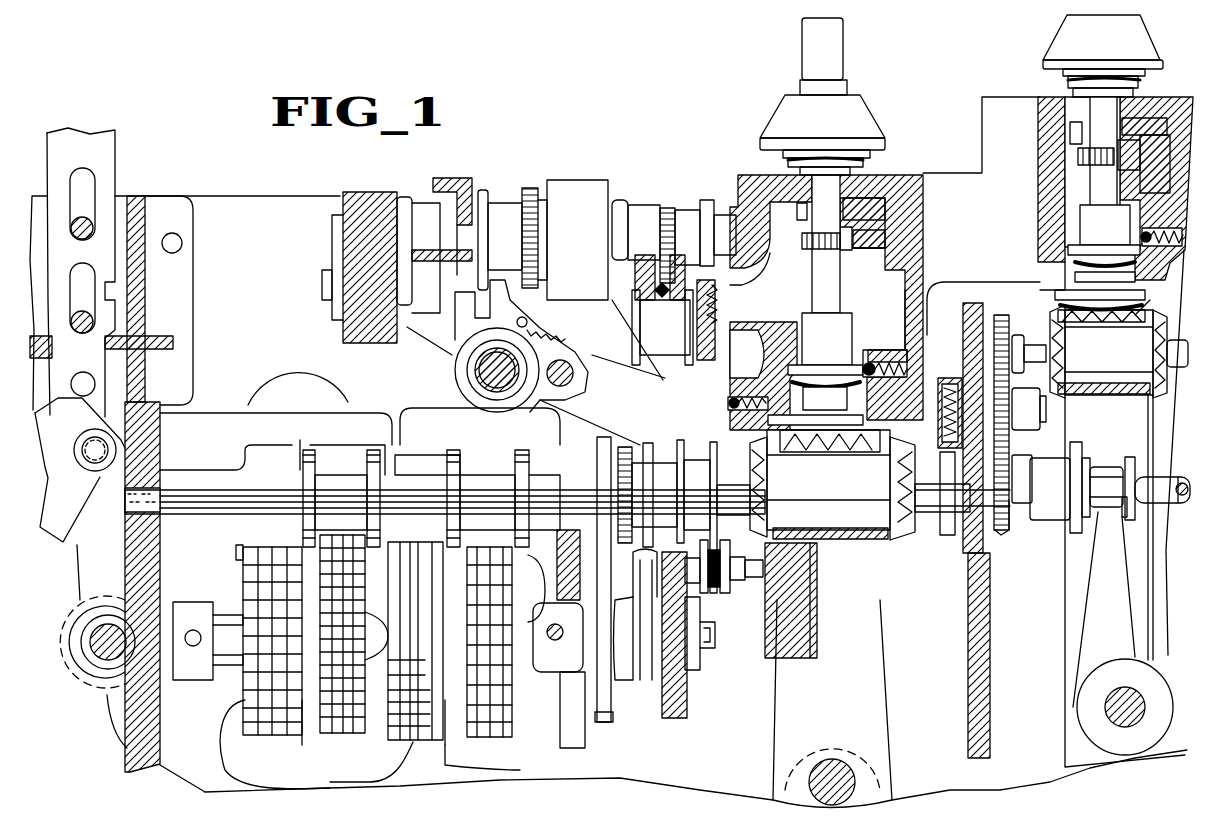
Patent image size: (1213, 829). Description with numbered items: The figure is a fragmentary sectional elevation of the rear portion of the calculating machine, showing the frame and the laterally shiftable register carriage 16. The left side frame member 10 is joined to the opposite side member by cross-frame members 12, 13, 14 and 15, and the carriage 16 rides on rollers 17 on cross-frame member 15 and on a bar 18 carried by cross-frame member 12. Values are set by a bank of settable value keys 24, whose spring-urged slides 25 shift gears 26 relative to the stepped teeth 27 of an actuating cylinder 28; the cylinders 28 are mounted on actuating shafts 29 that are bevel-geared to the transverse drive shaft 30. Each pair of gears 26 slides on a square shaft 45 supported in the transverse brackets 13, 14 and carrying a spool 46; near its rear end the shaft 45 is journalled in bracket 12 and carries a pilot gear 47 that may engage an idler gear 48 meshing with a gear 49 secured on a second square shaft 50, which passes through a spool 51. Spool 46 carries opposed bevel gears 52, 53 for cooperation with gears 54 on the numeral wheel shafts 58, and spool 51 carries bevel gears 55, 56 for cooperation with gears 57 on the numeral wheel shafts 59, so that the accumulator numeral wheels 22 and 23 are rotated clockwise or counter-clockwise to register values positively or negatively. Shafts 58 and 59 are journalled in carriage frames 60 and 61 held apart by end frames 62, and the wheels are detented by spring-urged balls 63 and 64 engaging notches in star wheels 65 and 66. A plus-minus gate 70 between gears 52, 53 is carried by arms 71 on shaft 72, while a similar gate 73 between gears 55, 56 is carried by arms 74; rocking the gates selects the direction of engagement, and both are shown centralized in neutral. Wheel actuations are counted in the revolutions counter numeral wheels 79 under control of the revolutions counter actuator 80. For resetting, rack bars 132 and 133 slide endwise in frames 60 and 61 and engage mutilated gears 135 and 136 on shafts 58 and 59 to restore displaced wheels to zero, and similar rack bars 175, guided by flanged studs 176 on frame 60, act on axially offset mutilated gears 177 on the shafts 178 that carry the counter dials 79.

The left side frame member 10 is at (255, 202).
The cross-frame member 12 is at (985, 612).
The cross-frame member 13 is at (583, 742).
The cross-frame member 14 is at (160, 722).
The cross-frame member 15 is at (378, 196).
The register carriage 16 is at (960, 166).
The rollers 17 is at (425, 312).
The bar 18 is at (904, 335).
The accumulator numeral wheels 22 is at (778, 112).
The accumulator numeral wheels 23 is at (1065, 38).
The settable value keys 24 is at (108, 158).
The spring-urged slides 25 is at (226, 420).
The gears 26 is at (365, 460).
The stepped teeth 27 is at (330, 605).
The actuating cylinder 28 is at (455, 748).
The actuating shafts 29 is at (235, 660).
The transverse drive shaft 30 is at (112, 624).
The square shaft 45 is at (503, 468).
The spool 46 is at (828, 480).
The pilot gear 47 is at (1001, 535).
The idler gear 48 is at (1018, 400).
The gear 49 is at (1002, 318).
The square shaft 50 is at (1035, 337).
The spool 51 is at (1108, 352).
The bevel gear 52 is at (767, 488).
The bevel gear 53 is at (890, 488).
The gears 54 is at (815, 445).
The bevel gear 55 is at (1060, 380).
The bevel gear 56 is at (1153, 355).
The gears 57 is at (1150, 310).
The numeral wheel shafts 58 is at (812, 285).
The numeral wheel shafts 59 is at (1100, 185).
The carriage frame 60 is at (915, 175).
The carriage frame 61 is at (1047, 100).
The end frames 62 is at (985, 108).
The spring-urged ball 63 is at (868, 355).
The spring-urged ball 64 is at (1150, 226).
The star wheel 65 is at (836, 350).
The star wheel 66 is at (1112, 215).
The plus-minus gate 70 is at (860, 540).
The arms 71 is at (885, 634).
The shaft 72 is at (810, 780).
The plus-minus gate 73 is at (1100, 393).
The arms 74 is at (1065, 567).
The revolutions counter numeral wheels 79 is at (583, 192).
The revolutions counter actuator 80 is at (450, 384).
The rack bar 132 is at (858, 225).
The rack bar 133 is at (1148, 118).
The mutilated gear 135 is at (805, 240).
The mutilated gear 136 is at (1078, 152).
The rack bars 175 is at (665, 300).
The flanged studs 176 is at (670, 352).
The mutilated gears 177 is at (660, 205).
The shafts 178 is at (636, 215).